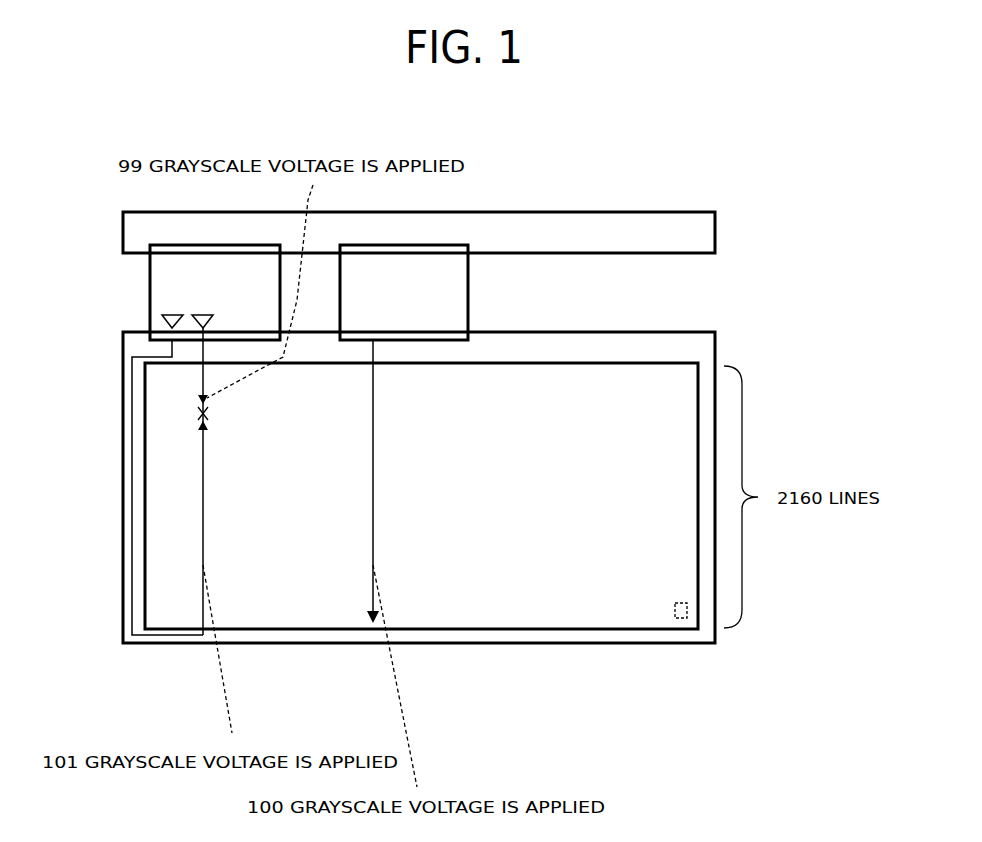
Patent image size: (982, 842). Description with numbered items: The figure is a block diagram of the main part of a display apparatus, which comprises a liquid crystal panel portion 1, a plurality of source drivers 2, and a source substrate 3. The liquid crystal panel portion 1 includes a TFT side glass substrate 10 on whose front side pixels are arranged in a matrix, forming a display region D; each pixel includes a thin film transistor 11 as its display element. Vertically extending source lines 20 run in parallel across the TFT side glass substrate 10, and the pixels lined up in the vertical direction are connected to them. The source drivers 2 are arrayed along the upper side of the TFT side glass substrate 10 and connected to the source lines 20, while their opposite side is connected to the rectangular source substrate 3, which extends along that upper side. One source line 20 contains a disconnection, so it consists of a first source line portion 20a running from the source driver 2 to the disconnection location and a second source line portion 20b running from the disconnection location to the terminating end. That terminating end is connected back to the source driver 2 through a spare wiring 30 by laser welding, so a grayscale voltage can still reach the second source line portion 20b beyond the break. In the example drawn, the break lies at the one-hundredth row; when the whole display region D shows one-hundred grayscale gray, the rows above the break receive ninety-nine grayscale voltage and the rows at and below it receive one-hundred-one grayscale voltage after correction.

The liquid crystal panel portion 1 is at (716, 324).
The source driver 2 is at (160, 287).
The source substrate 3 is at (603, 211).
The TFT side glass substrate 10 is at (570, 645).
The thin film transistor 11 is at (687, 620).
The source line 20 is at (209, 490).
The first source line portion 20a is at (200, 375).
The second source line portion 20b is at (200, 530).
The spare wiring 30 is at (132, 472).
The display region D is at (576, 358).